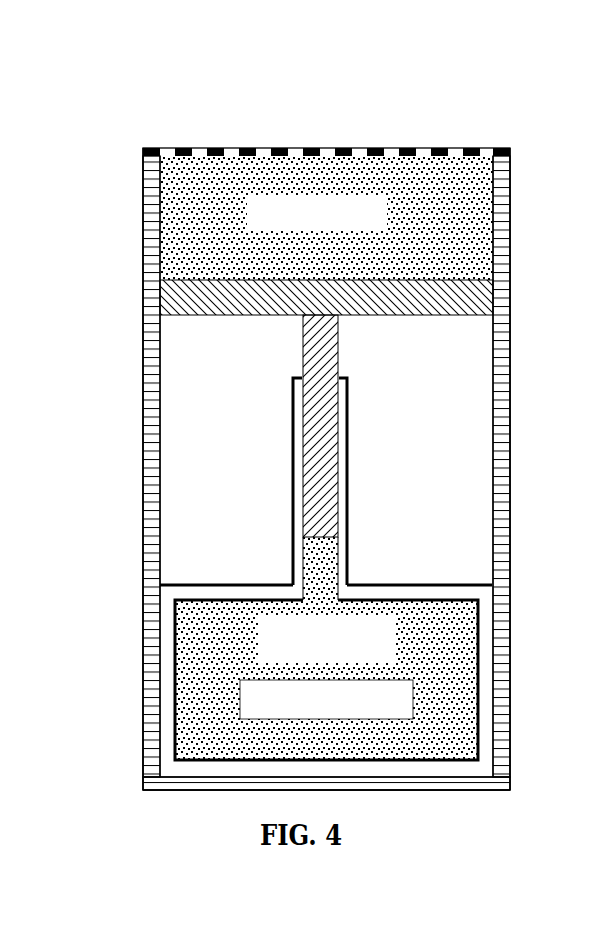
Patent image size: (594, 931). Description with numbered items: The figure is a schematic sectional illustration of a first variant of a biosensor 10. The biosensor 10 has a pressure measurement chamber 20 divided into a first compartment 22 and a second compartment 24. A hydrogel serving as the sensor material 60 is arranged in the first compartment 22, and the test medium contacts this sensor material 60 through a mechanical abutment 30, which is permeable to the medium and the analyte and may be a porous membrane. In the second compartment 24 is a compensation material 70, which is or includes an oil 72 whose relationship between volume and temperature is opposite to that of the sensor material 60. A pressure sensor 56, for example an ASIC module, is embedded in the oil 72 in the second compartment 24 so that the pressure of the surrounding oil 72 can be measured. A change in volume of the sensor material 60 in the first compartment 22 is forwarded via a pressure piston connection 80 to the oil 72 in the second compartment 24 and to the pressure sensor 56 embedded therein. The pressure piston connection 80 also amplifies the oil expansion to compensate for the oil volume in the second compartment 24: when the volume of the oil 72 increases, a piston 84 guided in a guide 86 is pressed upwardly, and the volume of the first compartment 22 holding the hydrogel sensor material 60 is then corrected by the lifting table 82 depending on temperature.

The biosensor 10 is at (132, 118).
The pressure measurement chamber 20 is at (143, 258).
The first compartment 22 is at (277, 218).
The second compartment 24 is at (270, 680).
The mechanical abutment 30 is at (280, 148).
The pressure sensor 56 is at (240, 717).
The sensor material 60 is at (317, 211).
The compensation material 70 is at (326, 680).
The oil 72 is at (326, 680).
The pressure piston connection 80 is at (327, 537).
The lifting table 82 is at (185, 302).
The piston 84 is at (318, 350).
The guide 86 is at (292, 410).